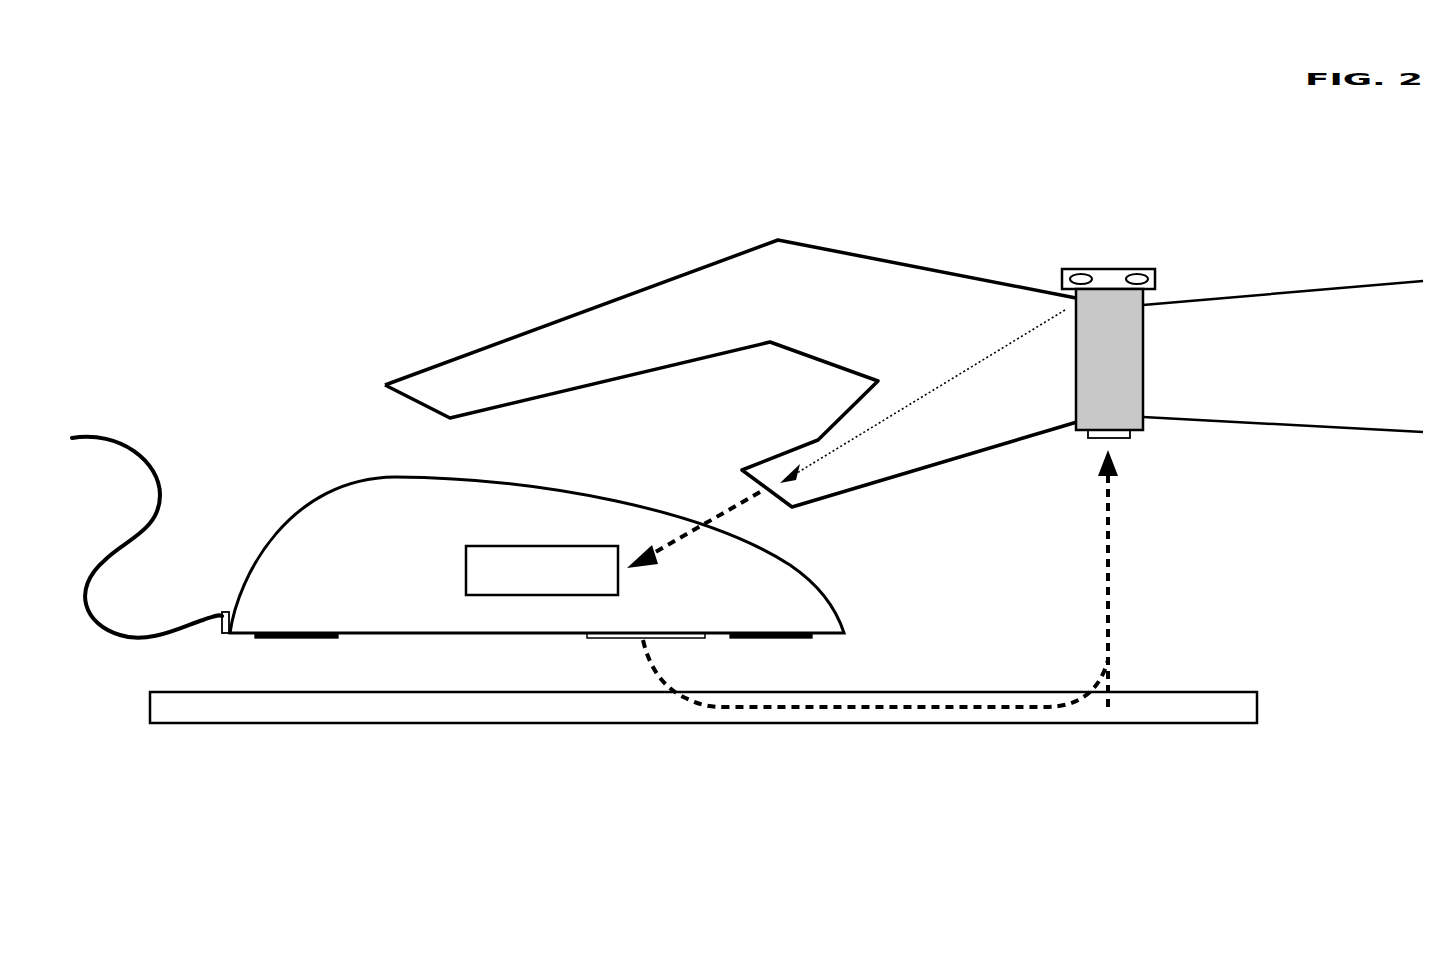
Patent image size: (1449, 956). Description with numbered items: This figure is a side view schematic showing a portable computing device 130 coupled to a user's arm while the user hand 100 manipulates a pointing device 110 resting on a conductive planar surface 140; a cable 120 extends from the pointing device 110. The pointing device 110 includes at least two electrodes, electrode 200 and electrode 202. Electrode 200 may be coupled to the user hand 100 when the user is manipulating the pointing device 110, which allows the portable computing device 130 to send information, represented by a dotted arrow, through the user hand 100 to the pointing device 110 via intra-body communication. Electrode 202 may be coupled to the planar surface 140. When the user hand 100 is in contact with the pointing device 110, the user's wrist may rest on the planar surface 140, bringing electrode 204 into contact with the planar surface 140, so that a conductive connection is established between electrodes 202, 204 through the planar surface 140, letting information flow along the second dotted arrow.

The user hand 100 is at (693, 265).
The pointing device 110 is at (308, 495).
The cable 120 is at (118, 438).
The portable computing device 130 is at (1150, 268).
The planar surface 140 is at (1228, 692).
The electrode 200 is at (463, 567).
The electrode 202 is at (670, 633).
The electrode 204 is at (1118, 438).